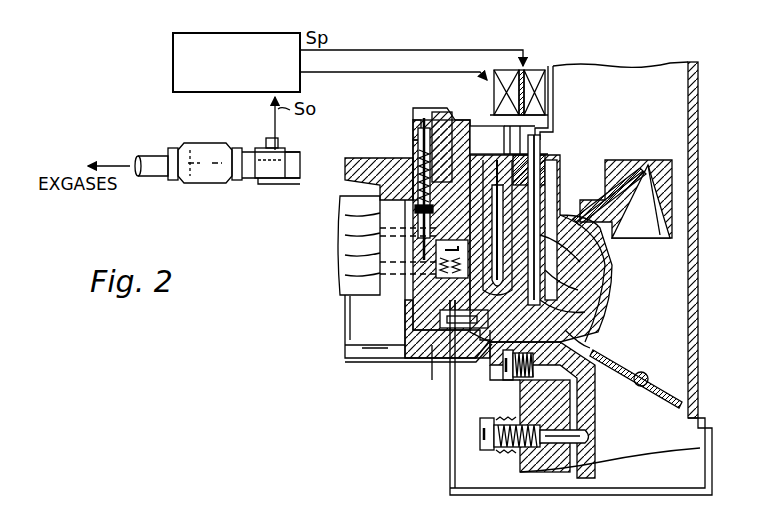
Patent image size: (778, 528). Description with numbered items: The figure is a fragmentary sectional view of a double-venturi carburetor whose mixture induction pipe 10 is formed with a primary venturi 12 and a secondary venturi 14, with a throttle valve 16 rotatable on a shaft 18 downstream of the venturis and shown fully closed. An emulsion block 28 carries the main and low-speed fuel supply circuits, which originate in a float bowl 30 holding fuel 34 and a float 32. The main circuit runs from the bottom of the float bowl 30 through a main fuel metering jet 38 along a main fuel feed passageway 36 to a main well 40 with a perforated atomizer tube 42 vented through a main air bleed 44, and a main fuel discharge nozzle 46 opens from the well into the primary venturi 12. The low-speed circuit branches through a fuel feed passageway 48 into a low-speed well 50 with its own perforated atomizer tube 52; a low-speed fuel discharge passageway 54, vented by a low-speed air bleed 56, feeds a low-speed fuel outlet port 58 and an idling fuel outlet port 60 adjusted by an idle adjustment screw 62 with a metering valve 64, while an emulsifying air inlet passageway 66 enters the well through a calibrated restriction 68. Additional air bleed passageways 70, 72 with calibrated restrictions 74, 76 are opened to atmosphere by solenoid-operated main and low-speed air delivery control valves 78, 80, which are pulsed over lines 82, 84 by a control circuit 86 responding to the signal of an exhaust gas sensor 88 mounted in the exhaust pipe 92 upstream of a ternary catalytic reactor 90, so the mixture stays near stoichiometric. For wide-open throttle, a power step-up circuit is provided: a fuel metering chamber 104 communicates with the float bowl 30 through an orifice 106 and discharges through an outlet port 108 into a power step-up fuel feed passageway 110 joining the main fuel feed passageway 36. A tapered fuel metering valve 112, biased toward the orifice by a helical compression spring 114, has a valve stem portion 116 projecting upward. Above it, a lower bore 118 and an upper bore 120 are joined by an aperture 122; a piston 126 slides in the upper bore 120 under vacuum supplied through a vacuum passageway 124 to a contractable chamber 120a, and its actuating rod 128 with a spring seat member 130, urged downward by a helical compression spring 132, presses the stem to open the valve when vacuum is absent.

The mixture induction pipe 10 is at (699, 298).
The primary venturi 12 is at (652, 160).
The secondary venturi 14 is at (618, 303).
The throttle valve 16 is at (660, 393).
The shaft 18 is at (644, 387).
The emulsion block 28 is at (385, 364).
The float bowl 30 is at (345, 362).
The float 32 is at (340, 296).
The fuel 34 is at (375, 337).
The main fuel feed passageway 36 is at (508, 372).
The main fuel metering jet 38 is at (420, 350).
The main well 40 is at (616, 332).
The perforated atomizer tube 42 is at (610, 292).
The main air bleed 44 is at (600, 160).
The main fuel discharge nozzle 46 is at (622, 166).
The fuel feed passageway 48 is at (456, 400).
The low-speed well 50 is at (586, 312).
The perforated atomizer tube 52 is at (592, 345).
The low-speed fuel discharge passageway 54 is at (580, 288).
The low-speed air bleed 56 is at (535, 157).
The low-speed fuel outlet port 58 is at (598, 376).
The idling fuel outlet port 60 is at (592, 437).
The idle adjustment screw 62 is at (498, 452).
The metering valve 64 is at (590, 464).
The emulsifying air inlet passageway 66 is at (520, 360).
The calibrated restriction 68 is at (578, 262).
The additional air bleed passageway 70 is at (640, 272).
The additional air bleed passageway 72 is at (512, 160).
The calibrated restriction 74 is at (545, 137).
The calibrated restriction 76 is at (540, 150).
The main air delivery control valve 78 is at (538, 68).
The low-speed air delivery control valve 80 is at (487, 80).
The line 82 is at (386, 50).
The line 84 is at (363, 72).
The control circuit 86 is at (173, 66).
The exhaust gas sensor 88 is at (262, 150).
The catalytic reactor 90 is at (205, 143).
The exhaust pipe 92 is at (268, 184).
The fuel metering chamber 104 is at (369, 318).
The orifice 106 is at (437, 245).
The outlet port 108 is at (452, 380).
The power step-up fuel feed passageway 110 is at (512, 382).
The fuel metering valve 112 is at (437, 274).
The helical compression spring 114 is at (435, 347).
The valve stem portion 116 is at (437, 262).
The lower bore 118 is at (420, 184).
The upper bore 120 is at (415, 142).
The contractable chamber 120a is at (418, 116).
The aperture 122 is at (370, 158).
The vacuum passageway 124 is at (440, 118).
The piston 126 is at (414, 128).
The actuating rod 128 is at (462, 122).
The spring seat member 130 is at (425, 228).
The helical compression spring 132 is at (418, 207).